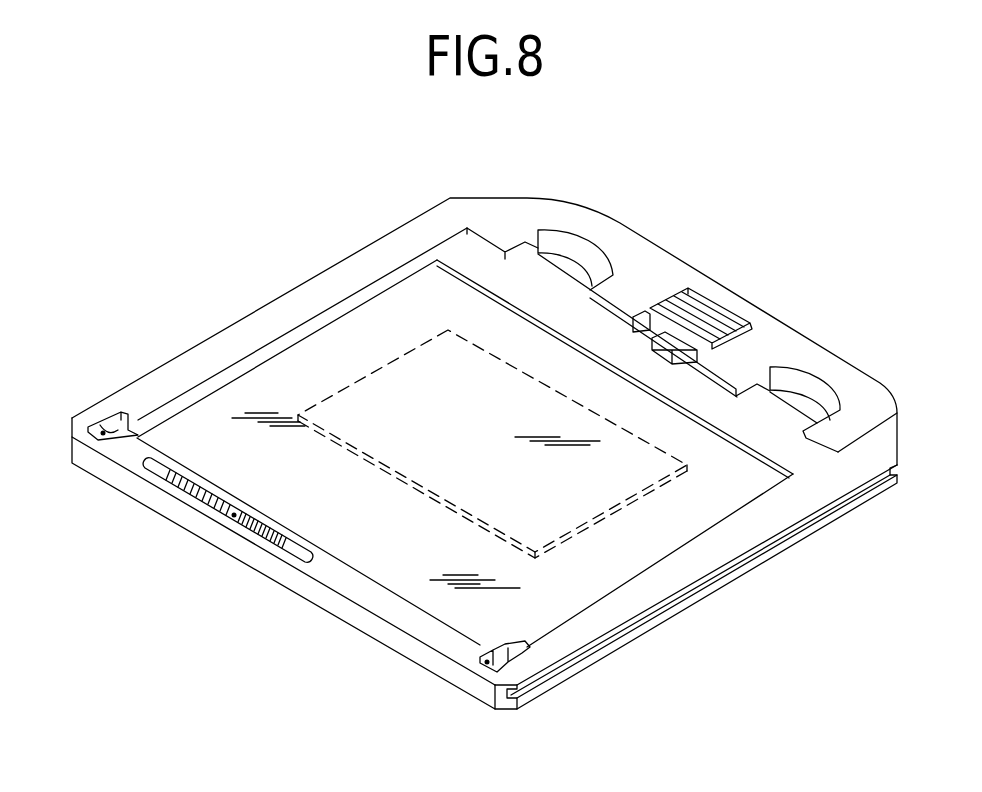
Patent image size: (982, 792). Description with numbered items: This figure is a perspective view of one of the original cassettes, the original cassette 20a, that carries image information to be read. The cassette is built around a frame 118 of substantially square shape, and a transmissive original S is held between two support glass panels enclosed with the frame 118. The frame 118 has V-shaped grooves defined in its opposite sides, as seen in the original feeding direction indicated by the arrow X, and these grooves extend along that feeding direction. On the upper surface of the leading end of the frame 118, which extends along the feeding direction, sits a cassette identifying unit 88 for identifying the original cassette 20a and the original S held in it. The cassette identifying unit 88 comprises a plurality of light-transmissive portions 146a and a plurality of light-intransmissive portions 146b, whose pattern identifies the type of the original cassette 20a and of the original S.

The original cassette 20a is at (223, 563).
The frame 118 is at (652, 277).
The cassette identifying unit 88 is at (157, 473).
The light-transmissive portions 146a is at (218, 491).
The light-intransmissive portions 146b is at (268, 519).
The original S is at (573, 507).
The original feeding direction arrow X is at (143, 329).